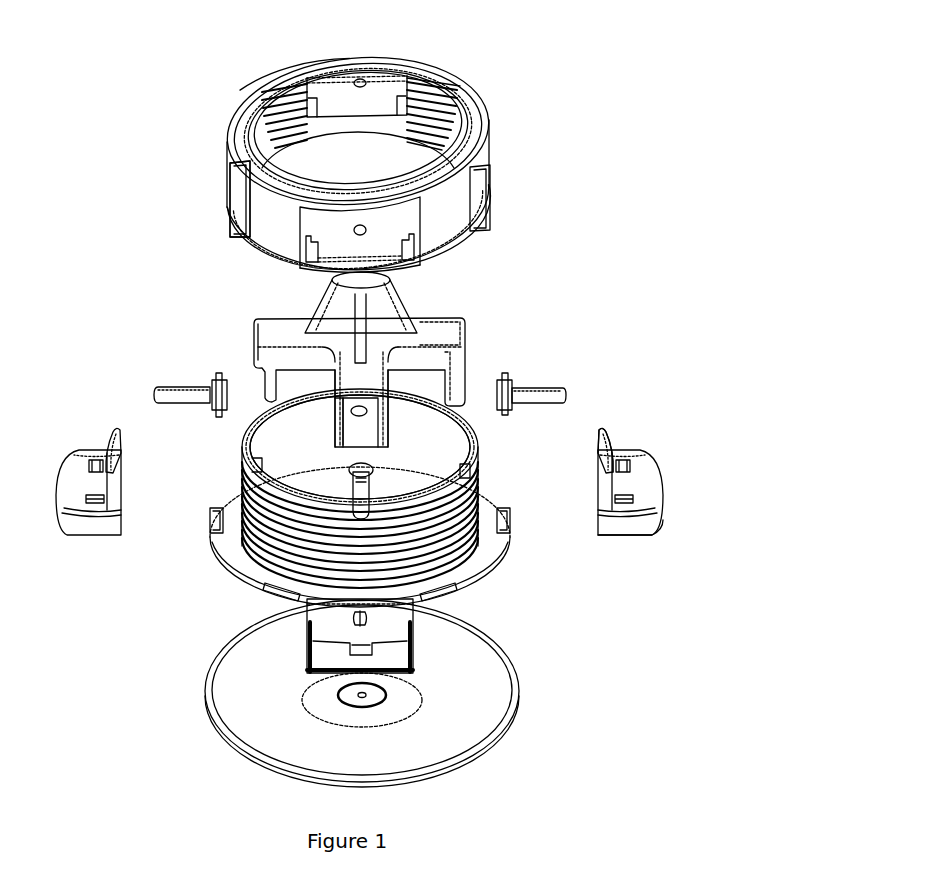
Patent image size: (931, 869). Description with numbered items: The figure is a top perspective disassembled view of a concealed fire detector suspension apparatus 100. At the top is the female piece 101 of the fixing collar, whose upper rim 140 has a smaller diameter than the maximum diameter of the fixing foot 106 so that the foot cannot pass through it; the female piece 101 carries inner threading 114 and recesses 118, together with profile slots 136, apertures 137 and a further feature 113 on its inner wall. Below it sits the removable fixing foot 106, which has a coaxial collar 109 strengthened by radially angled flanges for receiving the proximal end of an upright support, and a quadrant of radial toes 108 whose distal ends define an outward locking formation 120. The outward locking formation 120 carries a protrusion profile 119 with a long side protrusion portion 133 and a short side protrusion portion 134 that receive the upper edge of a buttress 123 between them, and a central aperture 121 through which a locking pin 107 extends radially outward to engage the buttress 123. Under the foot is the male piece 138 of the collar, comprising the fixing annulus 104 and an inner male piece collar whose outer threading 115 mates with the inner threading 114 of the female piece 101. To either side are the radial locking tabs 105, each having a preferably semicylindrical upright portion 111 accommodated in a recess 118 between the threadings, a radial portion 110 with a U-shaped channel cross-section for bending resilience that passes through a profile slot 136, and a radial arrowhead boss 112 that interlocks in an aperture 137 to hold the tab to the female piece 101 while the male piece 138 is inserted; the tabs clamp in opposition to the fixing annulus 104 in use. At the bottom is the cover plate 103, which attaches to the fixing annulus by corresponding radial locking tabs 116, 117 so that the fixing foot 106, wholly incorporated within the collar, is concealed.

The fire detector suspension apparatus 100 is at (560, 72).
The female piece 101 is at (490, 168).
The cover plate 103 is at (518, 686).
The fixing annulus 104 is at (470, 558).
The radial locking tab 105 is at (665, 490).
The fixing foot 106 is at (470, 323).
The locking pin 107 is at (567, 395).
The radial toe 108 is at (445, 329).
The coaxial collar 109 is at (340, 292).
The radial portion 110 is at (630, 536).
The upright portion 111 is at (600, 449).
The radial arrowhead boss 112 is at (95, 466).
The hole 113 is at (364, 79).
The inner threading 114 is at (441, 104).
The outer threading 115 is at (246, 457).
The radial locking tab 116 is at (212, 536).
The radial locking tab 117 is at (467, 618).
The recess 118 is at (397, 92).
The protrusion profile 119 is at (336, 426).
The outward locking formation 120 is at (353, 427).
The central aperture 121 is at (361, 428).
The buttress 123 is at (468, 466).
The long side protrusion portion 133 is at (332, 409).
The short side protrusion portion 134 is at (384, 398).
The profile slot 136 is at (229, 196).
The aperture 137 is at (367, 229).
The male piece 138 is at (510, 531).
The upper rim 140 is at (281, 88).